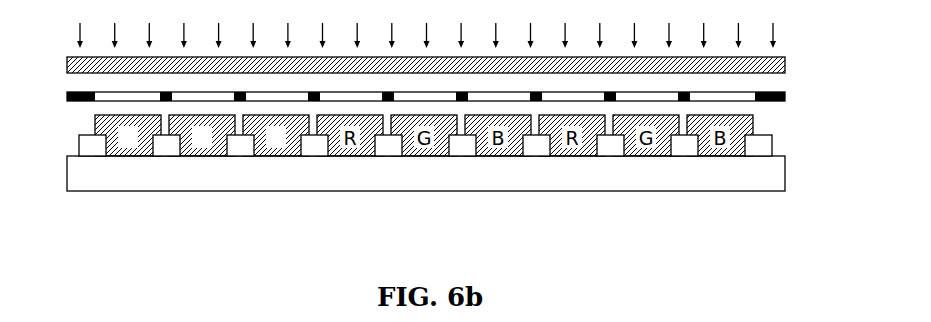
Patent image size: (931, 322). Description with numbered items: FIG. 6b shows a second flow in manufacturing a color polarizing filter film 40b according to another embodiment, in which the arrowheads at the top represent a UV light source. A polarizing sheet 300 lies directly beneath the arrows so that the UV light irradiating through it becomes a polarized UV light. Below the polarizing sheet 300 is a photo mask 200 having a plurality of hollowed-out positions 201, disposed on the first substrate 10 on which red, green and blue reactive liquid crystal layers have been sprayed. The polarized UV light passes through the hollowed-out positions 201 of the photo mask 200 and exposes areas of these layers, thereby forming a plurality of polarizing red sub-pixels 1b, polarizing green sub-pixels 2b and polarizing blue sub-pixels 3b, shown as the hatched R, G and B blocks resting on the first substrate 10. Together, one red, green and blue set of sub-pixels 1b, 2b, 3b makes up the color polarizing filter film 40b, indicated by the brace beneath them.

The polarizing sheet 300 is at (785, 65).
The photo mask 200 is at (785, 97).
The hollowed-out positions 201 is at (122, 100).
The first substrate 10 is at (650, 167).
The polarizing red sub-pixels 1b is at (128, 156).
The polarizing green sub-pixels 2b is at (200, 156).
The polarizing blue sub-pixels 3b is at (269, 173).
The color polarizing filter film 40b is at (202, 196).